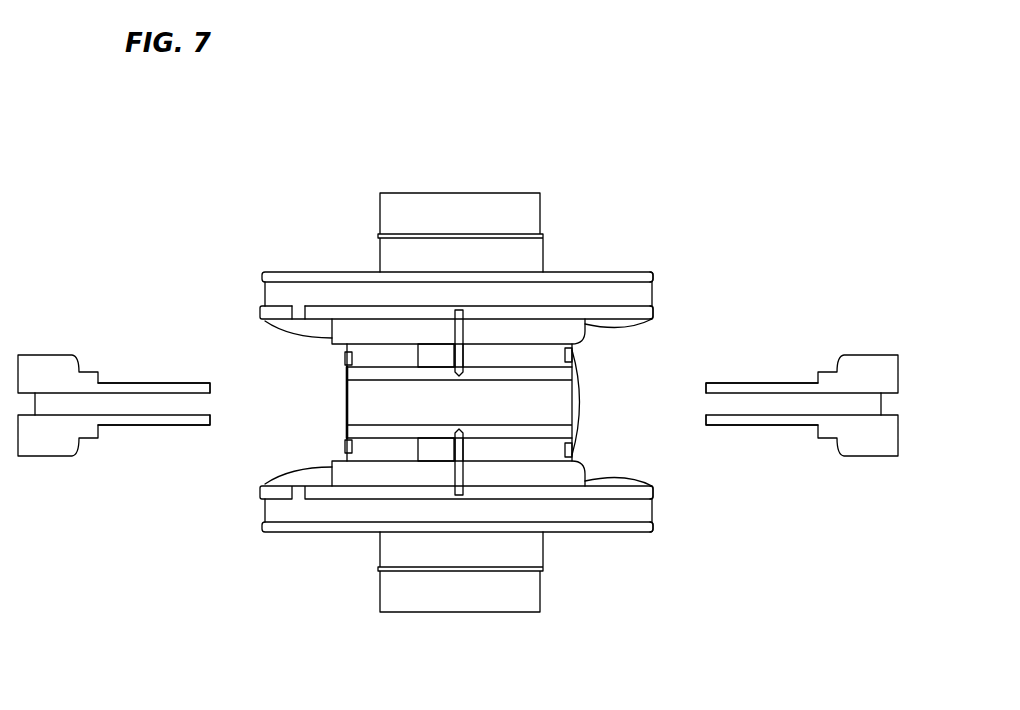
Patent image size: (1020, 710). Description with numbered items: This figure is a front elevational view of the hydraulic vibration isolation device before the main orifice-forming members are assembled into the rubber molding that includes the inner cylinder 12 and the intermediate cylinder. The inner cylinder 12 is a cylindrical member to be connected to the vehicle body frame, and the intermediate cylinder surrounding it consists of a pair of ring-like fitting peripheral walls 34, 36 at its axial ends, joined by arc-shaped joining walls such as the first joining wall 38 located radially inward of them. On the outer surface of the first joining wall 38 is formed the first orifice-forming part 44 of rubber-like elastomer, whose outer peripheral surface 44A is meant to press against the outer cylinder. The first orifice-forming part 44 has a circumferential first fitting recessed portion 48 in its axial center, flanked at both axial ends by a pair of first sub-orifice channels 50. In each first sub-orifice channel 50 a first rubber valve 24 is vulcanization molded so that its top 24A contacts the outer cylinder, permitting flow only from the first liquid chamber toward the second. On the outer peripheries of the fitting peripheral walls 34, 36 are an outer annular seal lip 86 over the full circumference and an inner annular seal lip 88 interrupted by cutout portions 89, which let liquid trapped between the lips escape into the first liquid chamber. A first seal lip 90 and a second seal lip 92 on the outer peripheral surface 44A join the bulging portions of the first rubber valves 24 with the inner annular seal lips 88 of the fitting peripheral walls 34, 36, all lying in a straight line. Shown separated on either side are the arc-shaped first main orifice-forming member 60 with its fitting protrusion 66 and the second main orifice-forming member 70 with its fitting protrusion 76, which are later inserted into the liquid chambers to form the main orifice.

The inner cylinder 12 is at (520, 207).
The first rubber valve 24 is at (438, 353).
The top of first rubber valve 24A is at (467, 357).
The first fitting peripheral wall 34 is at (272, 294).
The second fitting peripheral wall 36 is at (274, 511).
The first joining wall 38 is at (357, 392).
The first orifice-forming part 44 is at (325, 415).
The outer peripheral surface of first orifice-forming part 44A is at (387, 480).
The first fitting recessed portion 48 is at (552, 408).
The first sub-orifice channel 50 is at (540, 358).
The first main orifice-forming member 60 is at (45, 458).
The fitting protrusion 66 is at (172, 428).
The second main orifice-forming member 70 is at (874, 456).
The fitting protrusion 76 is at (762, 430).
The outer annular seal lip 86 is at (655, 274).
The inner annular seal lip 88 is at (655, 314).
The cutout portion 89 is at (297, 315).
The first seal lip 90 is at (462, 328).
The second seal lip 92 is at (468, 478).